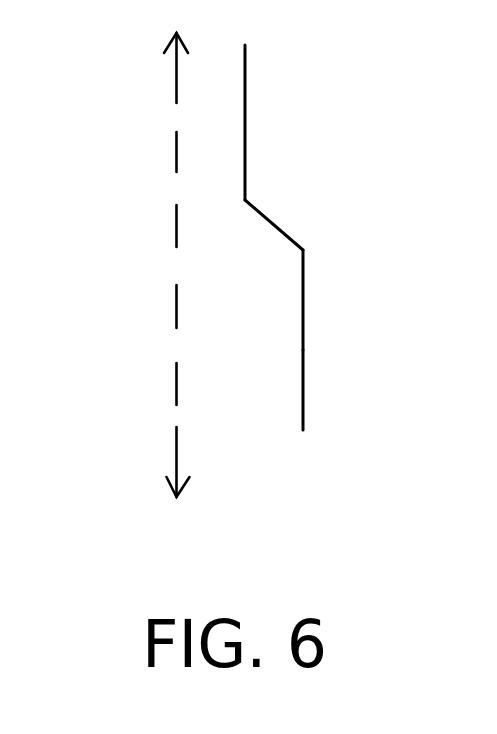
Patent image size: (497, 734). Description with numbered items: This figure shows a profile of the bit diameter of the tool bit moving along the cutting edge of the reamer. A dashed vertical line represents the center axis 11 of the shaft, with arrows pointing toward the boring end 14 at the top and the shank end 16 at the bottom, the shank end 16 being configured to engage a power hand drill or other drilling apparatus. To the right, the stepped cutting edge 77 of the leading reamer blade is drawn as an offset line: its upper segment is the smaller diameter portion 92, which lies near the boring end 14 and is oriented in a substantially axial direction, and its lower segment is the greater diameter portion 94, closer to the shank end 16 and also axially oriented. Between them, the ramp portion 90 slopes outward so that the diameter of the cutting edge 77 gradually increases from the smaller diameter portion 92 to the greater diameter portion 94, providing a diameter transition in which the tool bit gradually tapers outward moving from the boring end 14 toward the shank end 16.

The center axis 11 is at (178, 452).
The boring end 14 is at (179, 51).
The shank end 16 is at (181, 482).
The smaller diameter portion 92 is at (222, 110).
The ramp portion 90 is at (258, 237).
The stepped cutting edge 77 is at (303, 293).
The greater diameter portion 94 is at (287, 375).